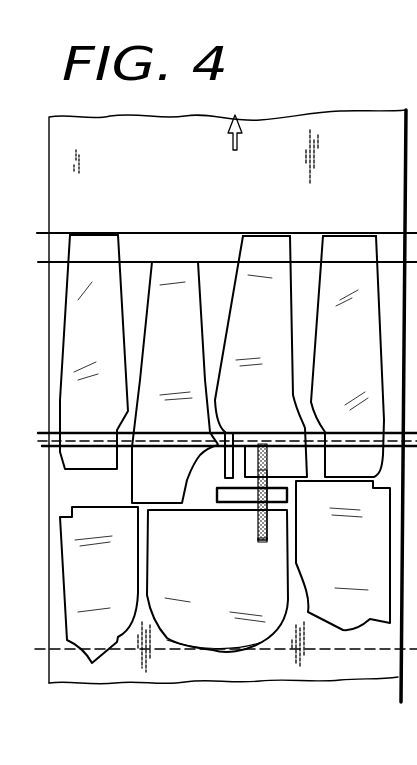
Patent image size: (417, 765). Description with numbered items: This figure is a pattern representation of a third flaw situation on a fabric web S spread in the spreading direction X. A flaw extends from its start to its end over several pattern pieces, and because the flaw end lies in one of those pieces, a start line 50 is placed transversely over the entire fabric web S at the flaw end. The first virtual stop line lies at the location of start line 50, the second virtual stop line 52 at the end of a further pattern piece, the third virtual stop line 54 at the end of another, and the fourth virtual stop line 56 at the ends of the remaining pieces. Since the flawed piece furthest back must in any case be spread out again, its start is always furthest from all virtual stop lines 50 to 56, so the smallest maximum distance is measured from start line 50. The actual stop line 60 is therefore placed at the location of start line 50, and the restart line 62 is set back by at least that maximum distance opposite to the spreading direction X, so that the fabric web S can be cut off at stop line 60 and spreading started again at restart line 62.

The fabric web S is at (386, 676).
The spreading direction X is at (226, 132).
The start line 50 is at (44, 447).
The second virtual stop line 52 is at (42, 432).
The third virtual stop line 54 is at (40, 263).
The fourth virtual stop line 56 is at (37, 233).
The actual stop line 60 is at (39, 442).
The restart line 62 is at (34, 649).